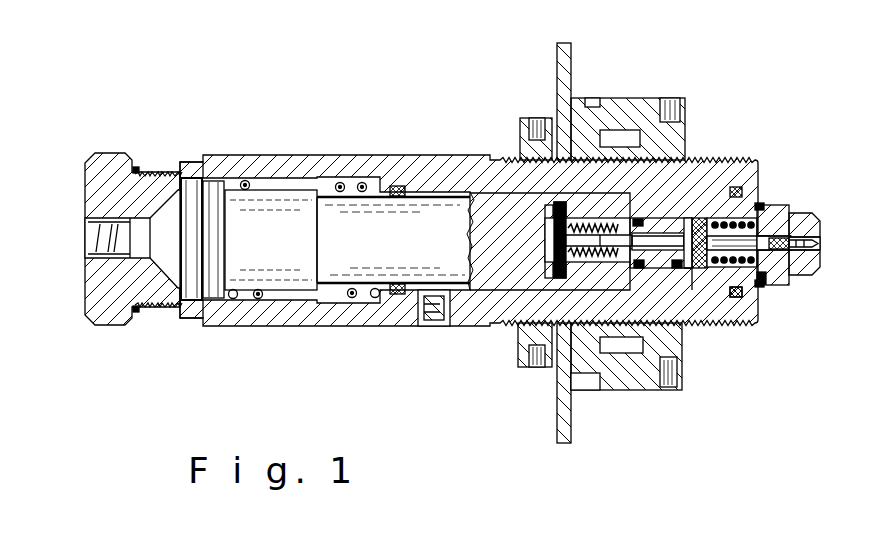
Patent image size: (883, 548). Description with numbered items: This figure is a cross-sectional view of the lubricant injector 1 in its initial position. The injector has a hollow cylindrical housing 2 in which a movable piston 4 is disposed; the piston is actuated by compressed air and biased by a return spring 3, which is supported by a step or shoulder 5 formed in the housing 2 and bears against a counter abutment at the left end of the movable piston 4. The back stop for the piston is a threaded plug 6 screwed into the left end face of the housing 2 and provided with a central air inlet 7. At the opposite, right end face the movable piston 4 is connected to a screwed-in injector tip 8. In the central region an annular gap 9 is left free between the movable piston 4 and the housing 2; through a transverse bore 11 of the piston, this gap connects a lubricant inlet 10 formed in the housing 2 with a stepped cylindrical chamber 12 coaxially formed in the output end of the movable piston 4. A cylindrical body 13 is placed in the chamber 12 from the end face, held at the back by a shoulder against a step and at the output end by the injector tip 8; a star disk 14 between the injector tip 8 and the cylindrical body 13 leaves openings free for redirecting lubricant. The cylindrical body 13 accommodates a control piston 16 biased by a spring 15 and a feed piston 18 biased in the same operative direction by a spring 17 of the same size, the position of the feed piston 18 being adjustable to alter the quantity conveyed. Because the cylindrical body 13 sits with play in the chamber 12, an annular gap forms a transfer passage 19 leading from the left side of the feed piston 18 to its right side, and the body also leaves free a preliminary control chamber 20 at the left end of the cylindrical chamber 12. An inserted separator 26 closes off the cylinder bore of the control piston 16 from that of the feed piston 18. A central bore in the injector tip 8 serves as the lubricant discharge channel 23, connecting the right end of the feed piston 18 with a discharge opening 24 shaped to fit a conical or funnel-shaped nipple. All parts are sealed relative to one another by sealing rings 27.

The lubricant injector 1 is at (162, 343).
The hollow cylindrical housing 2 is at (170, 166).
The spring 3 is at (245, 182).
The movable piston 4 is at (298, 207).
The step or shoulder 5 is at (378, 190).
The threaded plug 6 is at (109, 165).
The central air inlet 7 is at (102, 244).
The injector tip 8 is at (815, 214).
The annular gap 9 is at (441, 196).
The lubricant inlet 10 is at (430, 317).
The transverse bore 11 is at (548, 272).
The cylindrical chamber 12 is at (518, 362).
The cylindrical body 13 is at (650, 218).
The star disk 14 is at (766, 210).
The spring 15 is at (526, 158).
The control piston 16 is at (553, 238).
The spring 17 is at (738, 298).
The feed piston 18 is at (689, 290).
The transfer passage 19 is at (698, 222).
The preliminary control chamber 20 is at (547, 255).
The lubricant discharge channel 23 is at (767, 280).
The discharge opening 24 is at (819, 246).
The separator 26 is at (678, 270).
The sealing rings 27 is at (397, 294).